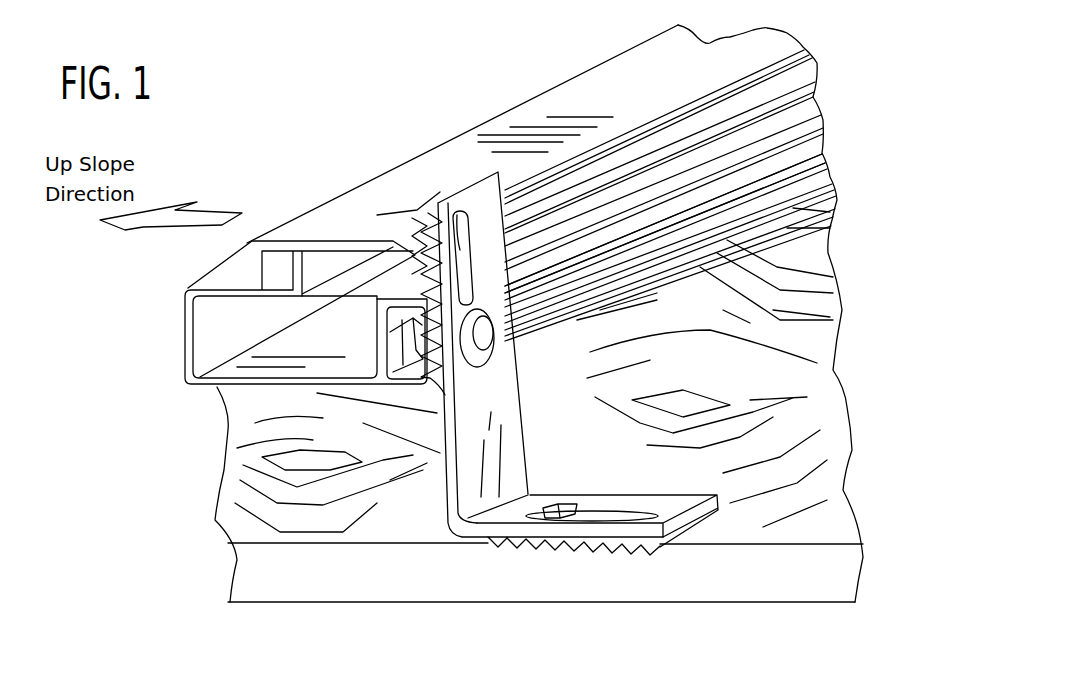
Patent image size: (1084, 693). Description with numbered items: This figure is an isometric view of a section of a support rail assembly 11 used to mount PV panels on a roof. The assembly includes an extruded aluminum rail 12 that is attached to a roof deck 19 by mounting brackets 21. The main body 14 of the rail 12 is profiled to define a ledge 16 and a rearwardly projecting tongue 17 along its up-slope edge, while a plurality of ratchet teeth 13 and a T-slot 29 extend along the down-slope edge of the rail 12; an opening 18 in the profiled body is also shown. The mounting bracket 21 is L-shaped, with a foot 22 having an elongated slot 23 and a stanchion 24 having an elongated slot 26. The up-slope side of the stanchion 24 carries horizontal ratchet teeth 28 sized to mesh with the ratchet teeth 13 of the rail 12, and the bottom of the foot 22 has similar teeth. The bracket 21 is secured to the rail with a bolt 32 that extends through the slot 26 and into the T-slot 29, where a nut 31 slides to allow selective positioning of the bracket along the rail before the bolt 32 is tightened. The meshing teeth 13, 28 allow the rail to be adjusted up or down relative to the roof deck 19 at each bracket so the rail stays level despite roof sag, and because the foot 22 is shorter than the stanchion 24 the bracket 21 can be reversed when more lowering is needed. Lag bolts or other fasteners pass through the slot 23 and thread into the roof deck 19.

The support rail assembly 11 is at (678, 377).
The rail 12 is at (728, 188).
The ratchet teeth 13 is at (612, 200).
The main body 14 is at (267, 412).
The ledge 16 is at (240, 283).
The tongue 17 is at (585, 92).
The channel opening 18 is at (262, 252).
The roof deck 19 is at (375, 502).
The mounting bracket 21 is at (570, 468).
The foot 22 is at (655, 507).
The elongated slot 23 is at (590, 517).
The stanchion 24 is at (505, 435).
The elongated slot 26 is at (470, 208).
The ratchet teeth 28 is at (420, 253).
The T-slot 29 is at (387, 359).
The nut 31 is at (395, 318).
The bolt 32 is at (490, 337).